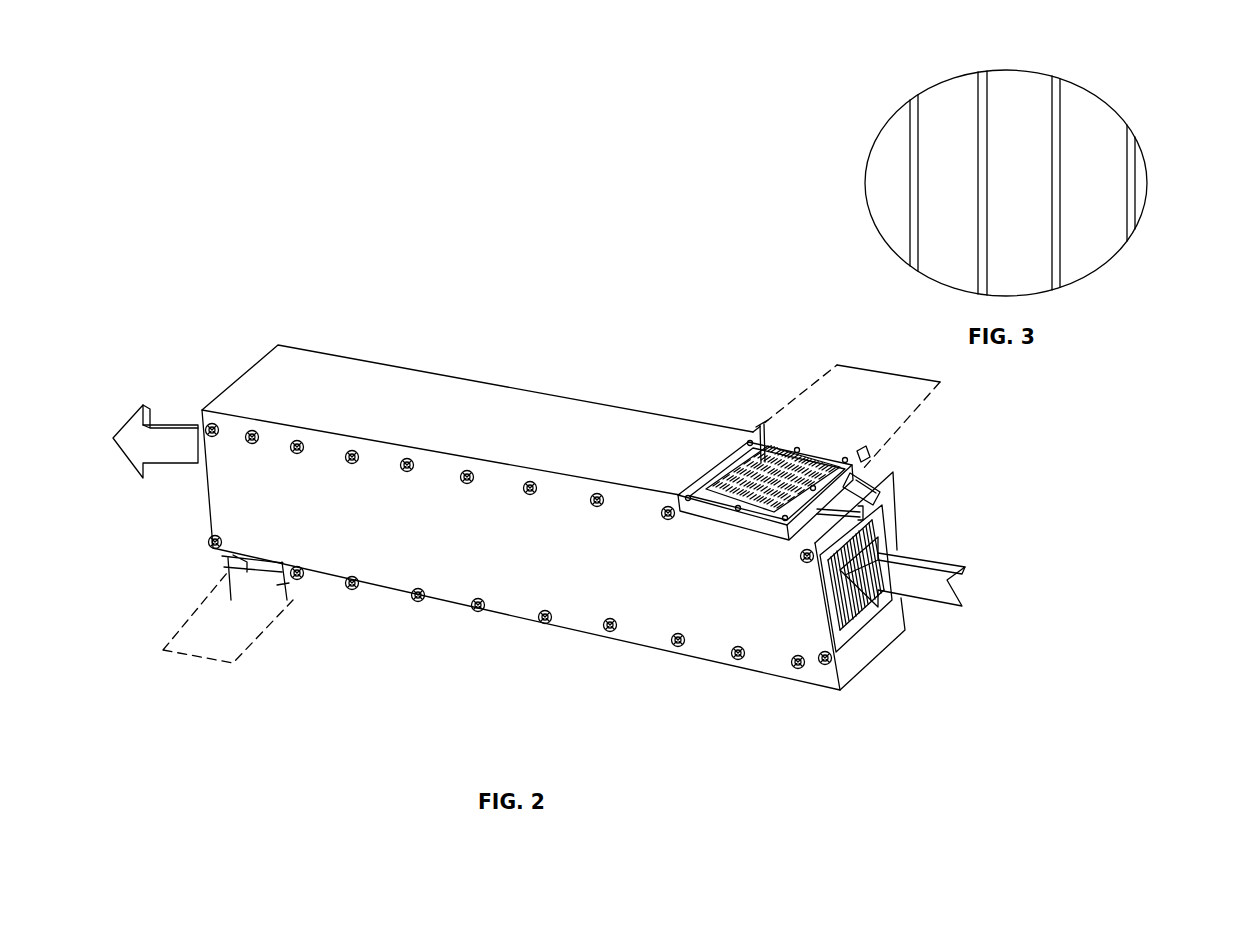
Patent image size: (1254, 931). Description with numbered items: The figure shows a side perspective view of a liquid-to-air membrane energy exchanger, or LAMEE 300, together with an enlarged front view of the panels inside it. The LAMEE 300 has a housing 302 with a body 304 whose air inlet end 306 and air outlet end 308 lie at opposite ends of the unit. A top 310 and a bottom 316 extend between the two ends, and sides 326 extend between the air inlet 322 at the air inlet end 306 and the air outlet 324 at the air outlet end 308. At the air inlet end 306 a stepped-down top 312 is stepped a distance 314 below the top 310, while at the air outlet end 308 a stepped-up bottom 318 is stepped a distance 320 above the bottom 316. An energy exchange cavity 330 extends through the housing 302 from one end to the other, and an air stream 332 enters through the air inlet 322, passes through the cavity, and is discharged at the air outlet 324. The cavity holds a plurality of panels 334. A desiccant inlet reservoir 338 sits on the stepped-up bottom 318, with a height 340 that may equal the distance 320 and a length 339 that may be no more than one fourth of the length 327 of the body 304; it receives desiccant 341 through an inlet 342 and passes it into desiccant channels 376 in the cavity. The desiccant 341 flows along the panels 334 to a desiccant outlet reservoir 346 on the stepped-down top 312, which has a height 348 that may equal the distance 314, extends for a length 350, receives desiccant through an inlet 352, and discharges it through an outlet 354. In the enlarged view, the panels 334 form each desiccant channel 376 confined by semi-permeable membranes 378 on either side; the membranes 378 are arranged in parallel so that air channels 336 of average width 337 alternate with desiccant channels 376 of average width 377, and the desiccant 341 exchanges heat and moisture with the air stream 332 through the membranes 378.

In FIG. 2, the LAMEE 300 is at (703, 263).
In FIG. 2, the housing 302 is at (378, 328).
In FIG. 2, the body 304 is at (412, 378).
In FIG. 2, the air inlet end 306 is at (956, 480).
In FIG. 2, the air outlet end 308 is at (172, 352).
In FIG. 2, the top 310 is at (586, 400).
In FIG. 2, the stepped-down top 312 is at (872, 482).
In FIG. 2, the distance 314 is at (767, 437).
In FIG. 2, the bottom 316 is at (555, 645).
In FIG. 2, the stepped-up bottom 318 is at (825, 703).
In FIG. 2, the distance 320 is at (280, 587).
In FIG. 2, the air inlet 322 is at (852, 622).
In FIG. 2, the air outlet 324 is at (222, 558).
In FIG. 2, the sides 326 is at (688, 412).
In FIG. 2, the length 327 is at (478, 645).
In FIG. 2, the energy exchange cavity 330 is at (920, 611).
In FIG. 3, the energy exchange cavity 330 is at (887, 50).
In FIG. 2, the air stream 332 is at (155, 443).
In FIG. 2, the panels 334 is at (850, 613).
In FIG. 3, the panels 334 is at (918, 119).
In FIG. 2, the air channels 336 is at (860, 635).
In FIG. 3, the air channels 336 is at (896, 132).
In FIG. 3, the average flow channel width 337 is at (1048, 177).
In FIG. 2, the desiccant inlet reservoir 338 is at (263, 572).
In FIG. 2, the length 339 is at (195, 655).
In FIG. 2, the height 340 is at (230, 562).
In FIG. 2, the desiccant 341 is at (884, 494).
In FIG. 2, the inlet 342 is at (230, 562).
In FIG. 2, the desiccant outlet reservoir 346 is at (808, 452).
In FIG. 2, the height 348 is at (866, 455).
In FIG. 2, the length 350 is at (885, 372).
In FIG. 2, the inlet 352 is at (745, 487).
In FIG. 2, the outlet 354 is at (797, 545).
In FIG. 2, the desiccant channels 376 is at (843, 645).
In FIG. 3, the desiccant channels 376 is at (970, 162).
In FIG. 3, the average flow channel width 377 is at (1123, 220).
In FIG. 3, the semi-permeable membranes 378 is at (985, 82).